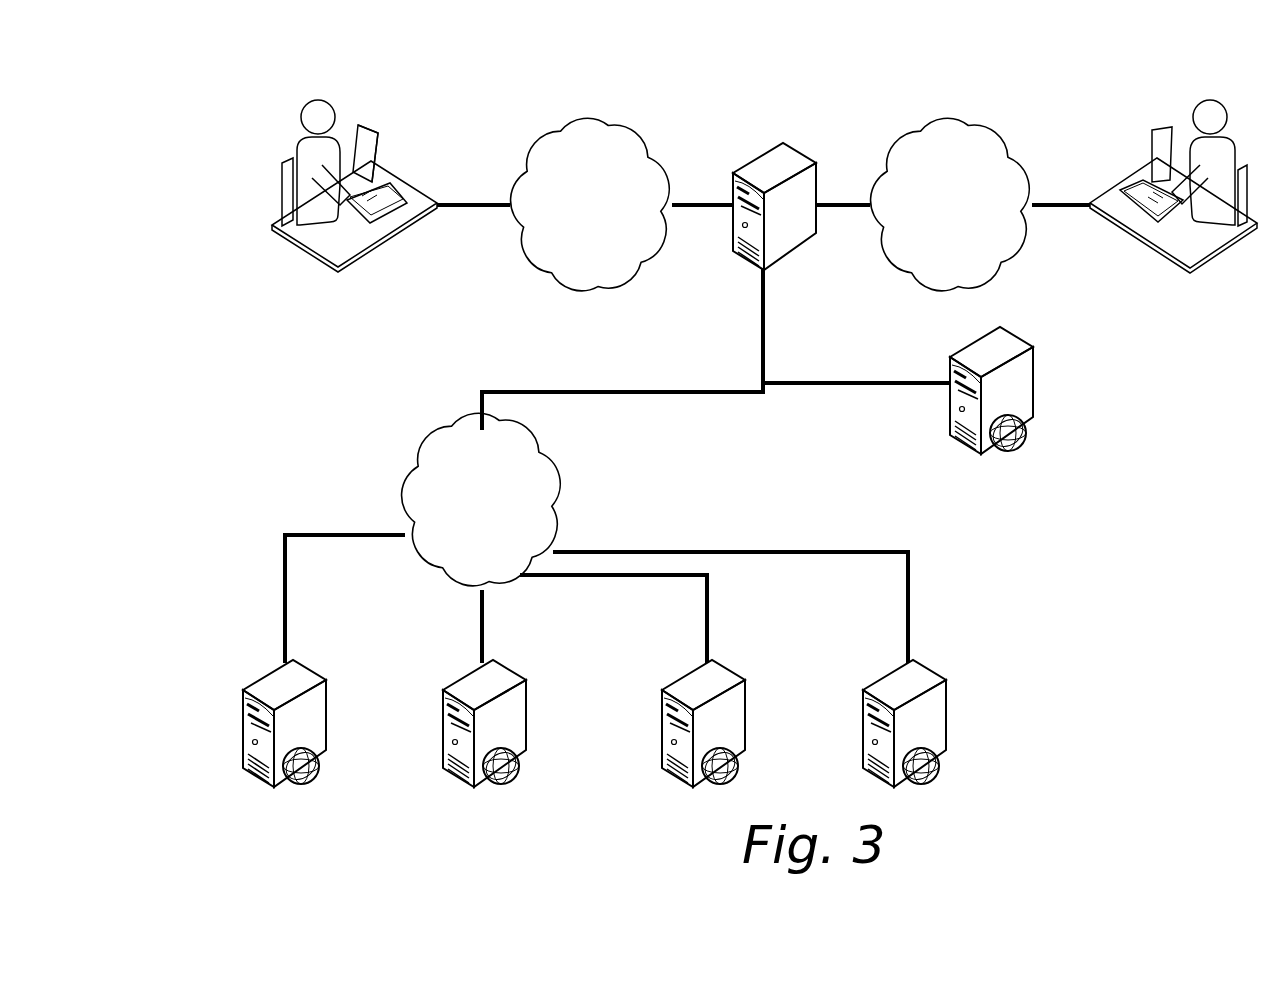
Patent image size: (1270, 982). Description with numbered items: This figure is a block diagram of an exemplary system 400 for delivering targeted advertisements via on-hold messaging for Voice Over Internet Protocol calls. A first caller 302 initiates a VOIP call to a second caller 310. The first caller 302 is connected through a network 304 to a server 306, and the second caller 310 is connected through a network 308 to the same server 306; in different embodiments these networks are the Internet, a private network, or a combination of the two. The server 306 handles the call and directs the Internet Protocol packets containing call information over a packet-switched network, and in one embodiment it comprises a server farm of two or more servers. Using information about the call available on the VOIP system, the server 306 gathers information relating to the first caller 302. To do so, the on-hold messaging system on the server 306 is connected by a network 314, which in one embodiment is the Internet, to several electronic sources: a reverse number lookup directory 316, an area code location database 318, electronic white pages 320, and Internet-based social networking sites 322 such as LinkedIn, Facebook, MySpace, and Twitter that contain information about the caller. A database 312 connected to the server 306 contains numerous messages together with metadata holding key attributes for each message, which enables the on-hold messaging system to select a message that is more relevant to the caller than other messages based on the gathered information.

The network system 400 is at (963, 57).
The first caller 302 is at (308, 162).
The network 304 is at (607, 214).
The server 306 is at (798, 150).
The network 308 is at (967, 214).
The second caller 310 is at (1158, 135).
The database 312 is at (1022, 340).
The network 314 is at (499, 510).
The reverse number lookup directory 316 is at (262, 676).
The area code location database 318 is at (463, 676).
The electronic white pages 320 is at (683, 675).
The Internet-based social networking sites 322 is at (883, 675).